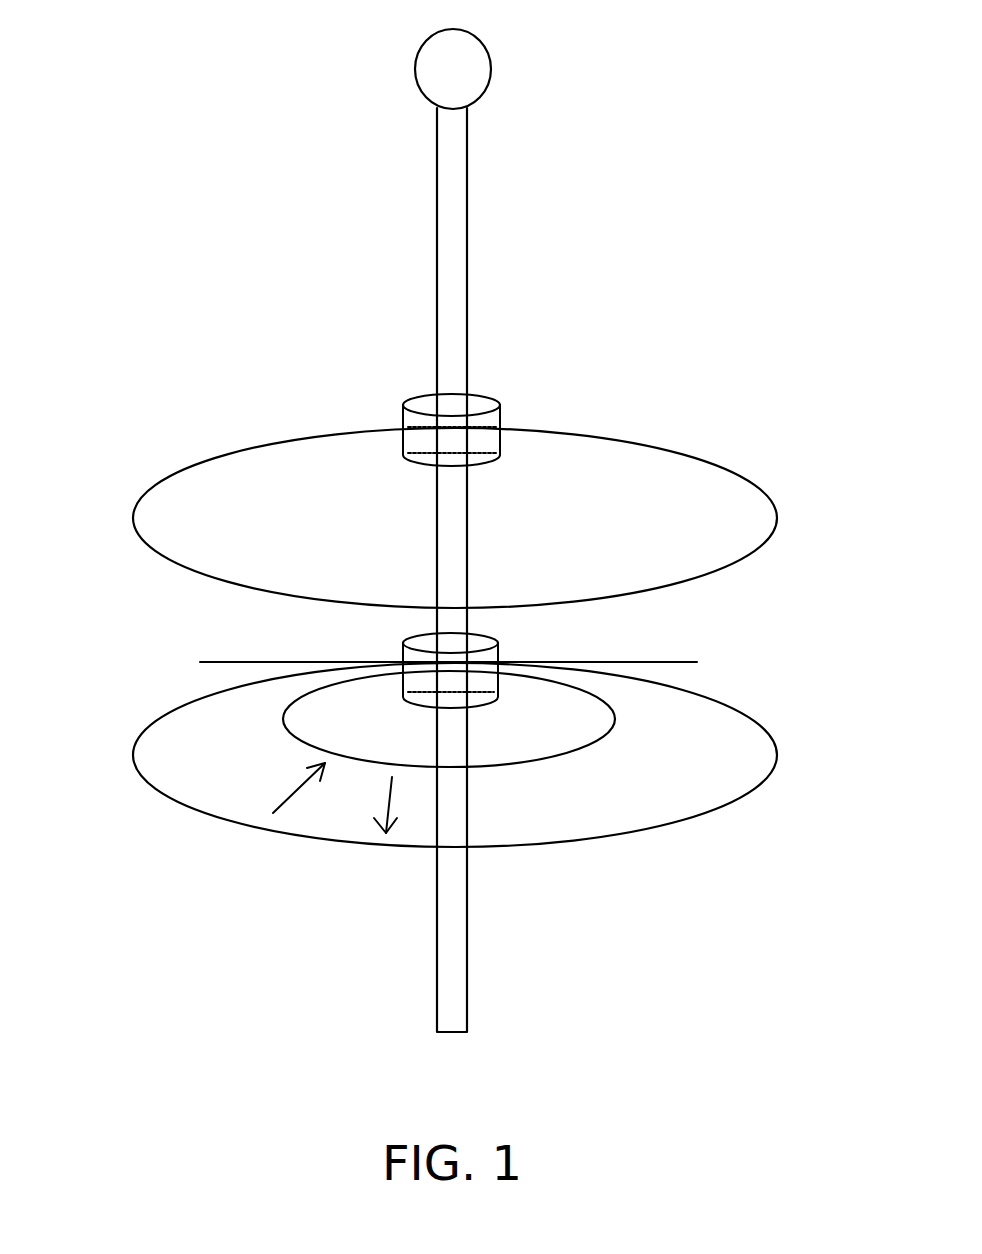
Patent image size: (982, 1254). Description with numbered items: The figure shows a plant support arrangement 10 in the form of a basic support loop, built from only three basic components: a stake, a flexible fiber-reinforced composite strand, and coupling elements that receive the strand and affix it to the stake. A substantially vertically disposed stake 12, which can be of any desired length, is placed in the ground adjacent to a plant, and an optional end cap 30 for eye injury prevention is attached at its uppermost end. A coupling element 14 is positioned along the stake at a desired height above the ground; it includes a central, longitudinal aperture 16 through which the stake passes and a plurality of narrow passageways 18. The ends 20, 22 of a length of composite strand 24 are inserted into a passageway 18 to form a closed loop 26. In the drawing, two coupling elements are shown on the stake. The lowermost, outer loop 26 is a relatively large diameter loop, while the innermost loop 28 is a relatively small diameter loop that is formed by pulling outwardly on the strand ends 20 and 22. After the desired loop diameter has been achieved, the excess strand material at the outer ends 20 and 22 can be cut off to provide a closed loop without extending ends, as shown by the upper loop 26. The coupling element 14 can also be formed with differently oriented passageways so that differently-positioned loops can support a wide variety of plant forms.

The plant support arrangement 10 is at (190, 120).
The stake 12 is at (467, 207).
The coupling element 14 is at (417, 438).
The central longitudinal aperture 16 is at (445, 404).
The narrow passageways 18 is at (480, 427).
The strand end 20 is at (246, 662).
The strand end 22 is at (637, 660).
The composite strand 24 is at (547, 850).
The closed loop 26 is at (655, 438).
The innermost loop 28 is at (582, 745).
The end cap 30 is at (487, 60).